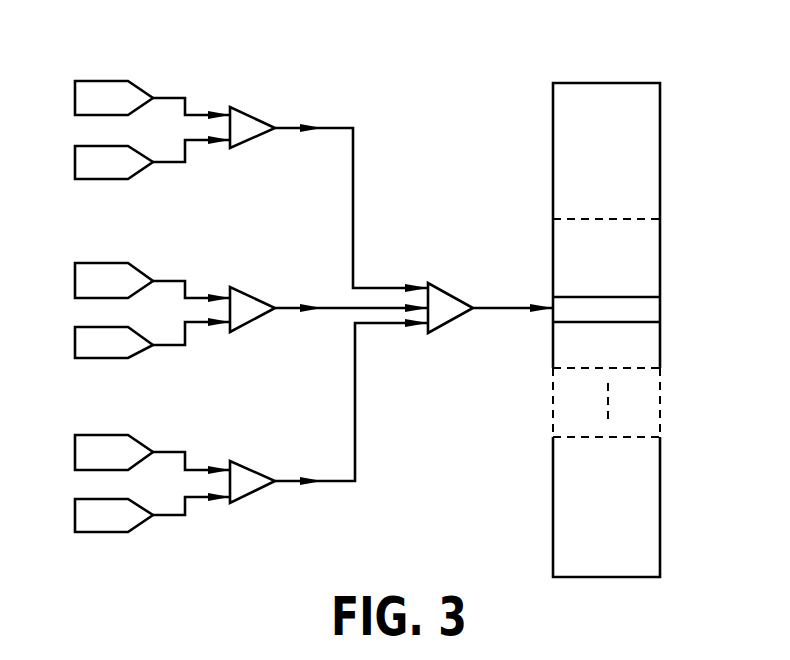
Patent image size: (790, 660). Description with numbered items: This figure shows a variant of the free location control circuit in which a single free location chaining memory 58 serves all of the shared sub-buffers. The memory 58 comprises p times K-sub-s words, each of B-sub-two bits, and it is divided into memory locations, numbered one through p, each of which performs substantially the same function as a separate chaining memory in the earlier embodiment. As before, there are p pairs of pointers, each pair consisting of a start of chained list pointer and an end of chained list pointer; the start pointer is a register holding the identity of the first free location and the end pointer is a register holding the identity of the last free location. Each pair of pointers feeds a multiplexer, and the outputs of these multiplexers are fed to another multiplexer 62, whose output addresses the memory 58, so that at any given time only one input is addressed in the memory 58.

The multiplexer 62 is at (445, 312).
The free location chaining memory 58 is at (670, 184).